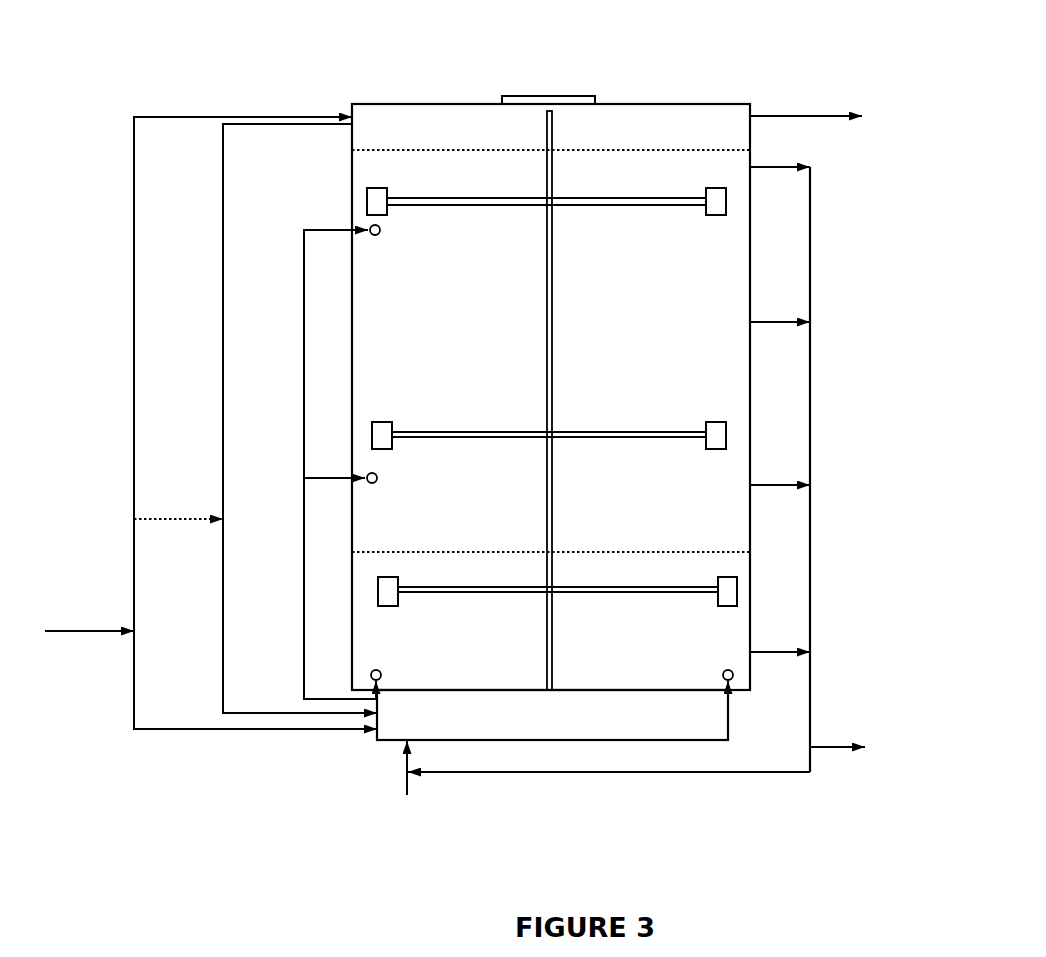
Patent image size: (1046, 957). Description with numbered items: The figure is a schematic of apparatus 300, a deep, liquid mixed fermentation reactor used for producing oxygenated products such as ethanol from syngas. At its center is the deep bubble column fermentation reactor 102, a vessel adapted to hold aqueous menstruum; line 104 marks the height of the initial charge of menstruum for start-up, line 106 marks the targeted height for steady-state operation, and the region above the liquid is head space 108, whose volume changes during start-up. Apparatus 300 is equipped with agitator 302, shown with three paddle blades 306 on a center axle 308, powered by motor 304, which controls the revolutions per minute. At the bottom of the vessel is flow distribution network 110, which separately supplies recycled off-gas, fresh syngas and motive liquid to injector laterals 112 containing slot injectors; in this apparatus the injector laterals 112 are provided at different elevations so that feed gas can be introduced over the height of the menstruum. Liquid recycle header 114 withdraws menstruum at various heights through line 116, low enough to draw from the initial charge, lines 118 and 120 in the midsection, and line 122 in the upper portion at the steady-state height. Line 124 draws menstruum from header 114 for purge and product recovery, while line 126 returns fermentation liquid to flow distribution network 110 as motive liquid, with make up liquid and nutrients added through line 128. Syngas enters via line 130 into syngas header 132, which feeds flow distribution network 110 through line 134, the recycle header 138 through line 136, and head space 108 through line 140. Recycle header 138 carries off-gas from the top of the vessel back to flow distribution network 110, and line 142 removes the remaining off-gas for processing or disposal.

The apparatus 300 is at (837, 852).
The agitator 302 is at (400, 125).
The motor 304 is at (505, 80).
The paddle blades 306 is at (360, 203).
The center axle 308 is at (562, 168).
The fermentation reactor 102 is at (732, 398).
The line designating initial charge height 104 is at (723, 547).
The line designating steady-state height 106 is at (372, 148).
The head space 108 is at (723, 123).
The flow distribution network 110 is at (377, 748).
The injector laterals 112 is at (735, 678).
The liquid recycle header 114 is at (820, 510).
The withdrawal line 116 is at (772, 642).
The withdrawal line 118 is at (785, 463).
The withdrawal line 120 is at (773, 317).
The withdrawal line 122 is at (780, 158).
The purge and product recovery line 124 is at (840, 733).
The fermentation liquid recycle line 126 is at (743, 778).
The make up liquid line 128 is at (400, 790).
The syngas supply line 130 is at (92, 640).
The syngas header 132 is at (126, 483).
The syngas line 134 is at (238, 738).
The syngas line to recycle header 136 is at (193, 527).
The recycle header 138 is at (215, 346).
The syngas line to head space 140 is at (232, 110).
The off-gas removal line 142 is at (783, 108).